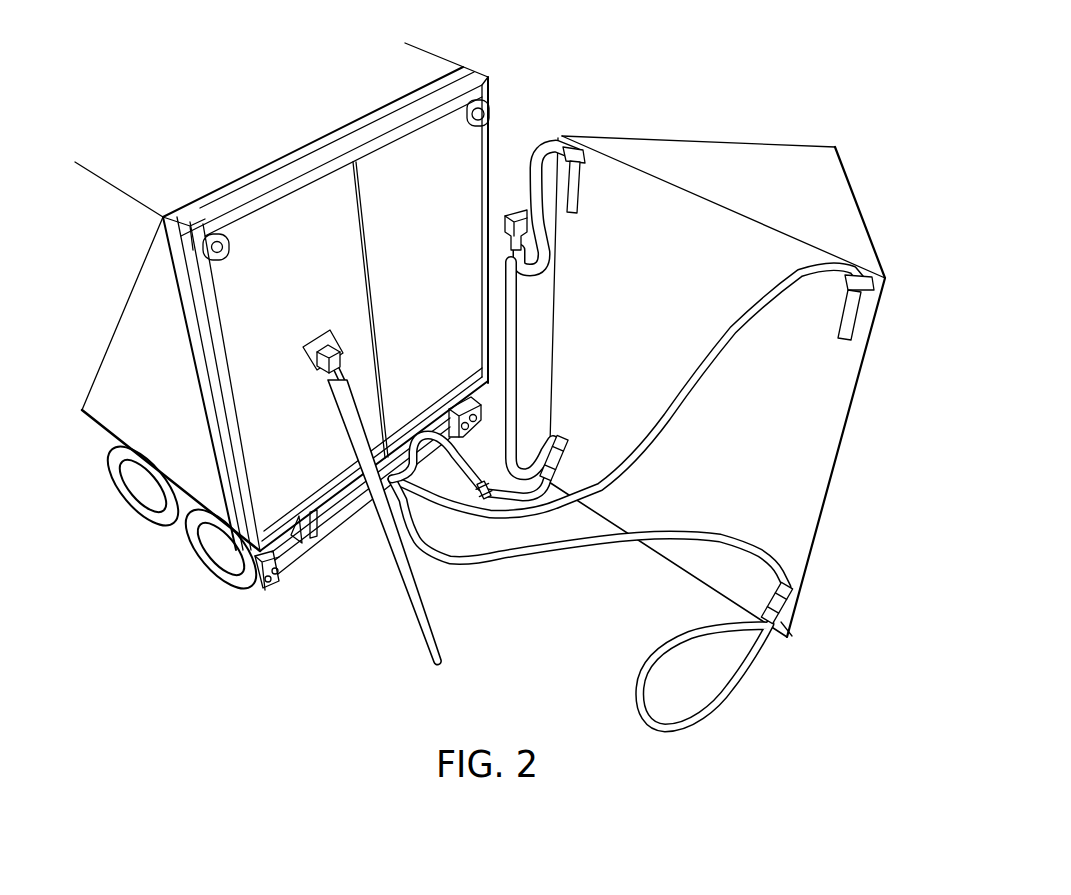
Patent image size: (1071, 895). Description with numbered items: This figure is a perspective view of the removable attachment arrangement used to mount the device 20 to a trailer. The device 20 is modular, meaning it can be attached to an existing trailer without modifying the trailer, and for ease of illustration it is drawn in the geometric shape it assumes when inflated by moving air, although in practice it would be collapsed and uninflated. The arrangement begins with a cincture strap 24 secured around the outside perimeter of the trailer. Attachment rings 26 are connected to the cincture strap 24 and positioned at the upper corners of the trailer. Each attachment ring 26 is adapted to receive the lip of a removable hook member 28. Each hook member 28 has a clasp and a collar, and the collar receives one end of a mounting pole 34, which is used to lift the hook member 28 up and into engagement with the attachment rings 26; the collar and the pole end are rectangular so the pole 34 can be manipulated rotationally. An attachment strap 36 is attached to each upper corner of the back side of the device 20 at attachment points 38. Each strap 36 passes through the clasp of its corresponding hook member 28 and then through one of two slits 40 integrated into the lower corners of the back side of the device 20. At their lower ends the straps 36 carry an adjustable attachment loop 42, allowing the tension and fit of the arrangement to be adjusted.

The device 20 is at (698, 98).
The cincture strap 24 is at (337, 128).
The attachment ring 26 is at (467, 108).
The hook member 28 is at (511, 214).
The mounting pole 34 is at (412, 602).
The attachment strap 36 is at (556, 140).
The attachment point 38 is at (580, 192).
The slit 40 is at (563, 457).
The adjustable attachment loop 42 is at (452, 490).